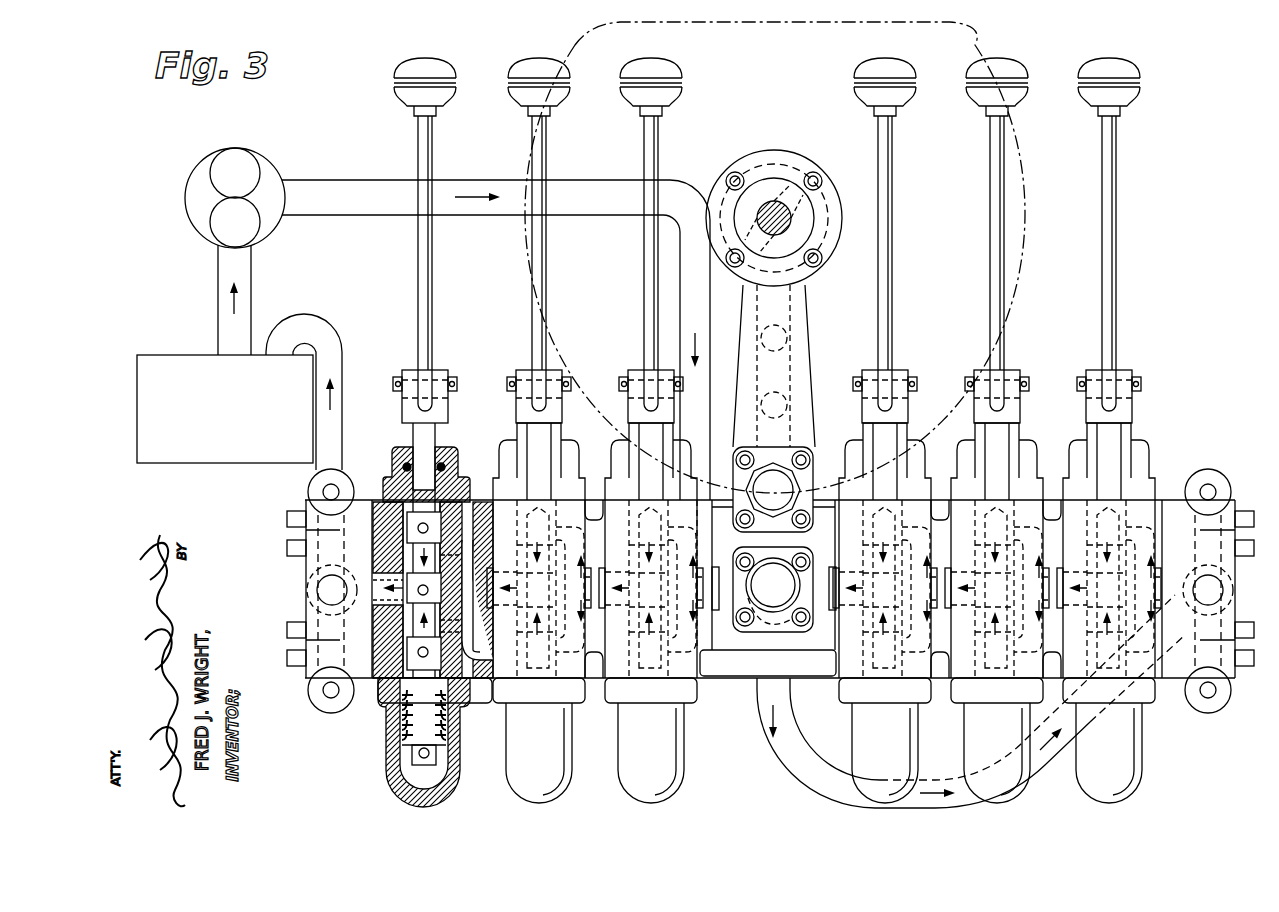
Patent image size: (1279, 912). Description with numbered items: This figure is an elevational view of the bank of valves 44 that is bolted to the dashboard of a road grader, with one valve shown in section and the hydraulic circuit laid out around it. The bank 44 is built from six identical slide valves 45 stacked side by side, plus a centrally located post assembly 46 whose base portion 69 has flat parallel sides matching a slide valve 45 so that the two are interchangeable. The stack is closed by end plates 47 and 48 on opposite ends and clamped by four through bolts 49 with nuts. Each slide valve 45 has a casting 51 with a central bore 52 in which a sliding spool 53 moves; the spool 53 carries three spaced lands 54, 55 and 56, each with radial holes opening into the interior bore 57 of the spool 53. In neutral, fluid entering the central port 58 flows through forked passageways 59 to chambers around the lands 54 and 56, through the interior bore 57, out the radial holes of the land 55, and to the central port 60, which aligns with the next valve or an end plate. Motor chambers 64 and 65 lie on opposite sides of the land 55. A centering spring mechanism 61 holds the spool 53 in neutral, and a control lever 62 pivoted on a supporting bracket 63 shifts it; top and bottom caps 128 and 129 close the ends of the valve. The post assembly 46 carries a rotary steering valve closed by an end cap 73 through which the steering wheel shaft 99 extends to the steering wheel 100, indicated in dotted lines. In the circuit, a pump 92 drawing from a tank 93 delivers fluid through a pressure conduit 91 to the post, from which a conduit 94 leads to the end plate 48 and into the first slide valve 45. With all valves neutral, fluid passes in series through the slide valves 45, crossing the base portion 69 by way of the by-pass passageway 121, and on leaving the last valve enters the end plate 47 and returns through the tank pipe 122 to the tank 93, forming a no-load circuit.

The bank of valves 44 is at (718, 740).
The slide valve 45 is at (375, 727).
The post assembly 46 is at (820, 350).
The end plate 47 is at (312, 623).
The end plate 48 is at (1192, 472).
The through bolts 49 is at (287, 548).
The casting 51 is at (388, 687).
The central bore 52 is at (381, 641).
The sliding spool 53 is at (452, 556).
The land 54 is at (424, 526).
The land 55 is at (424, 587).
The land 56 is at (424, 652).
The interior bore 57 is at (443, 633).
The central port 58 is at (455, 580).
The forked passageways 59 is at (466, 545).
The central port 60 is at (367, 525).
The centering spring mechanism 61 is at (405, 770).
The control lever 62 is at (416, 264).
The supporting bracket 63 is at (440, 410).
The motor chamber 64 is at (468, 555).
The motor chamber 65 is at (450, 620).
The base portion 69 is at (722, 640).
The end cap 73 is at (782, 190).
The pressure conduit 91 is at (690, 292).
The pump 92 is at (268, 163).
The tank 93 is at (225, 409).
The conduit 94 is at (806, 770).
The steering wheel shaft 99 is at (770, 215).
The steering wheel 100 is at (972, 58).
The by-pass passageway 121 is at (774, 632).
The tank pipe 122 is at (335, 357).
The top cap 128 is at (396, 448).
The bottom cap 129 is at (398, 748).